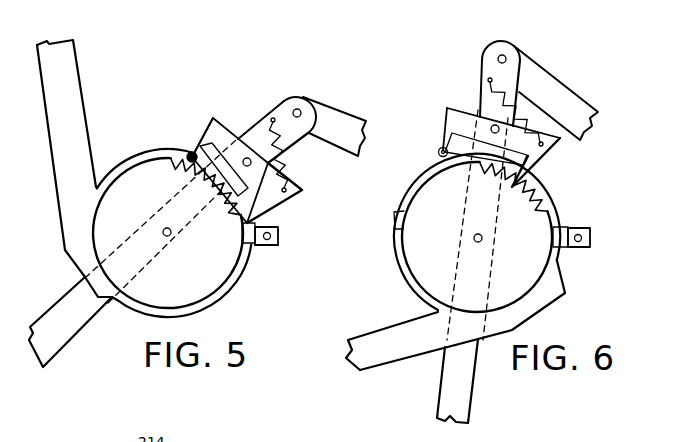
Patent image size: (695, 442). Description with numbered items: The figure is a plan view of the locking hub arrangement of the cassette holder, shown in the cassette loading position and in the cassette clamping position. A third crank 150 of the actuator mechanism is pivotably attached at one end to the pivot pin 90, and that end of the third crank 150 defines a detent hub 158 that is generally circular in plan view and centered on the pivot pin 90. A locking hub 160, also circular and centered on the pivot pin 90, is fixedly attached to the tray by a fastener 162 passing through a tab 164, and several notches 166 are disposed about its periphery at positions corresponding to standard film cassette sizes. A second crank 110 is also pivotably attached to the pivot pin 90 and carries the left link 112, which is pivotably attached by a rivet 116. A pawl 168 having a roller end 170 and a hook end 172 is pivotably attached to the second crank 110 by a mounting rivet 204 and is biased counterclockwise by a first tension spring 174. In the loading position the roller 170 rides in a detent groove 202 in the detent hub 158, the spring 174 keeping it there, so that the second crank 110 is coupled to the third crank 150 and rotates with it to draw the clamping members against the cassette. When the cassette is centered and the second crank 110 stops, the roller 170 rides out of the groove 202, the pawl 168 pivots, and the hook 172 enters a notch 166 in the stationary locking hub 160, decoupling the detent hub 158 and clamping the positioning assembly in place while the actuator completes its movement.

In FIG. 5, the pivot pin 90 is at (171, 238).
In FIG. 6, the pivot pin 90 is at (484, 240).
In FIG. 5, the second crank 110 is at (80, 331).
In FIG. 6, the second crank 110 is at (474, 380).
In FIG. 5, the left link 112 is at (327, 106).
In FIG. 6, the left link 112 is at (572, 90).
In FIG. 5, the rivet 116 is at (318, 72).
In FIG. 6, the rivet 116 is at (500, 83).
In FIG. 5, the third crank 150 is at (83, 102).
In FIG. 6, the third crank 150 is at (387, 327).
In FIG. 5, the detent hub 158 is at (132, 152).
In FIG. 6, the detent hub 158 is at (400, 279).
In FIG. 5, the locking hub 160 is at (242, 273).
In FIG. 6, the locking hub 160 is at (563, 278).
In FIG. 5, the fastener 162 is at (279, 236).
In FIG. 6, the fastener 162 is at (579, 237).
In FIG. 5, the tab 164 is at (270, 247).
In FIG. 5, the notches 166 is at (210, 230).
In FIG. 6, the notches 166 is at (540, 203).
In FIG. 5, the pawl 168 is at (215, 120).
In FIG. 6, the pawl 168 is at (449, 107).
In FIG. 5, the roller end 170 is at (193, 154).
In FIG. 6, the roller end 170 is at (438, 152).
In FIG. 5, the hook end 172 is at (272, 210).
In FIG. 6, the hook end 172 is at (535, 180).
In FIG. 5, the first tension spring 174 is at (290, 160).
In FIG. 6, the first tension spring 174 is at (548, 146).
In FIG. 5, the detent groove 202 is at (192, 152).
In FIG. 6, the detent groove 202 is at (392, 220).
In FIG. 5, the mounting rivet 204 is at (252, 140).
In FIG. 6, the mounting rivet 204 is at (488, 128).